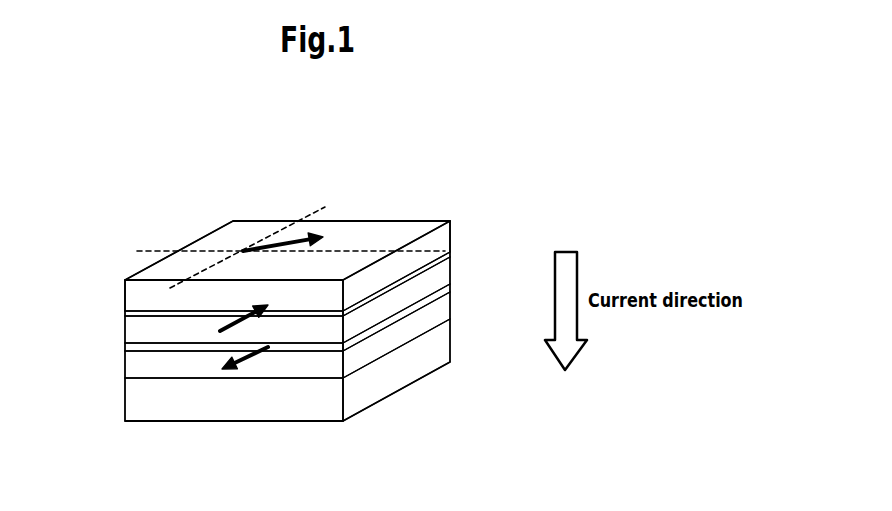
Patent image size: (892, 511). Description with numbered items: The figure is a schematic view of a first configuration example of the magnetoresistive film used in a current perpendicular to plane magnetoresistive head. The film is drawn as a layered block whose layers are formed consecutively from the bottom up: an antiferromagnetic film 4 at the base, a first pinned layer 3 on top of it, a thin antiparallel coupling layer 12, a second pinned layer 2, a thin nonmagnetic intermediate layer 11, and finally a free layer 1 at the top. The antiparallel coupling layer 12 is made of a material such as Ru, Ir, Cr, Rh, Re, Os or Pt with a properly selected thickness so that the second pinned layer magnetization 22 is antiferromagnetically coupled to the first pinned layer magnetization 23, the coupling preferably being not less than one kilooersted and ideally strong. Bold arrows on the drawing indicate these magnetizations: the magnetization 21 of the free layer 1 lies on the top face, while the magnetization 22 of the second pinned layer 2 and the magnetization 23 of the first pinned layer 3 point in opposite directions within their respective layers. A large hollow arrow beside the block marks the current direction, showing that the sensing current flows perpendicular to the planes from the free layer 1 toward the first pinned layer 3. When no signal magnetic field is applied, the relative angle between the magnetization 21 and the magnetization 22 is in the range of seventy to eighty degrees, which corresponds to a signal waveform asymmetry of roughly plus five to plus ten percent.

The free layer 1 is at (142, 295).
The second pinned layer 2 is at (142, 333).
The first pinned layer 3 is at (142, 370).
The antiferromagnetic film 4 is at (142, 403).
The nonmagnetic intermediate layer 11 is at (450, 267).
The antiparallel coupling layer 12 is at (450, 300).
The magnetization of the free layer 21 is at (322, 237).
The second pinned layer magnetization 22 is at (265, 323).
The first pinned layer magnetization 23 is at (253, 367).